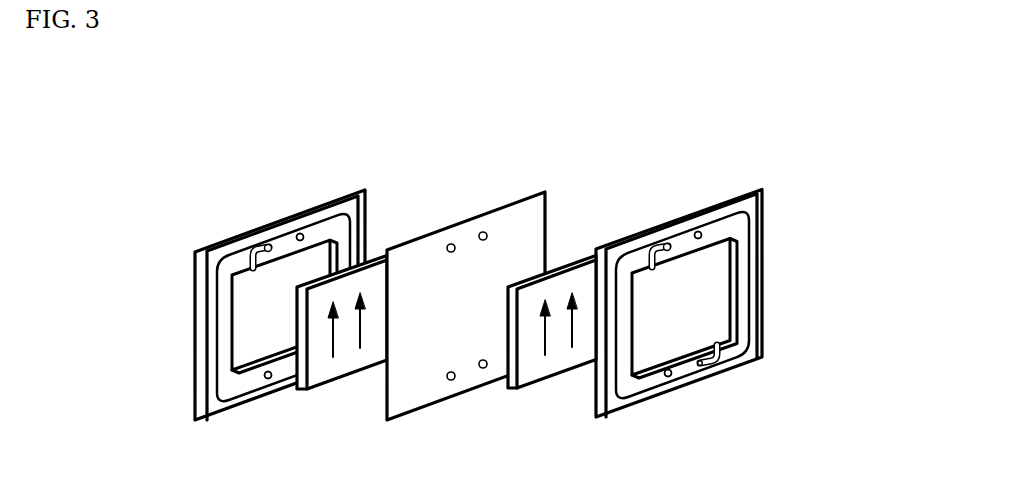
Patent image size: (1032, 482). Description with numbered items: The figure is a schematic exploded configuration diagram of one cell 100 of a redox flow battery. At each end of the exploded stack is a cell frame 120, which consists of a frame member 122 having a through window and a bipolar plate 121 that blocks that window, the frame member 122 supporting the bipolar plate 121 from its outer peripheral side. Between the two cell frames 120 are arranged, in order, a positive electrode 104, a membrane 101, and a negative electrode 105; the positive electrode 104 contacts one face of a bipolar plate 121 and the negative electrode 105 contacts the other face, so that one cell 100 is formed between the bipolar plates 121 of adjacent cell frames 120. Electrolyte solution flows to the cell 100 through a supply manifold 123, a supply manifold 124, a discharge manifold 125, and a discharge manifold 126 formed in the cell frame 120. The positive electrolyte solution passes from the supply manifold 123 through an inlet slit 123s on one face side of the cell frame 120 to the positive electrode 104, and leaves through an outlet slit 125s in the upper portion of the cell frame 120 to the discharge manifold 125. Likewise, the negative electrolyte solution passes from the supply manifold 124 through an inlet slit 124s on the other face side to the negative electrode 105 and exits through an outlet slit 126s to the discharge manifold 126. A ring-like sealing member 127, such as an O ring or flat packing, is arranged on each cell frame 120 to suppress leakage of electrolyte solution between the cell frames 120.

The cell 100 is at (443, 133).
The membrane 101 is at (497, 207).
The positive electrode 104 is at (358, 370).
The negative electrode 105 is at (535, 375).
The cell frame 120 is at (110, 343).
The bipolar plate 121 is at (252, 321).
The frame member 122 is at (198, 318).
The supply manifold 123 is at (720, 363).
The inlet slit 123s is at (710, 353).
The supply manifold 124 is at (267, 380).
The inlet slit 124s is at (250, 375).
The discharge manifold 125 is at (262, 244).
The outlet slit 125s is at (259, 251).
The discharge manifold 126 is at (297, 232).
The outlet slit 126s is at (305, 239).
The sealing member 127 is at (367, 218).